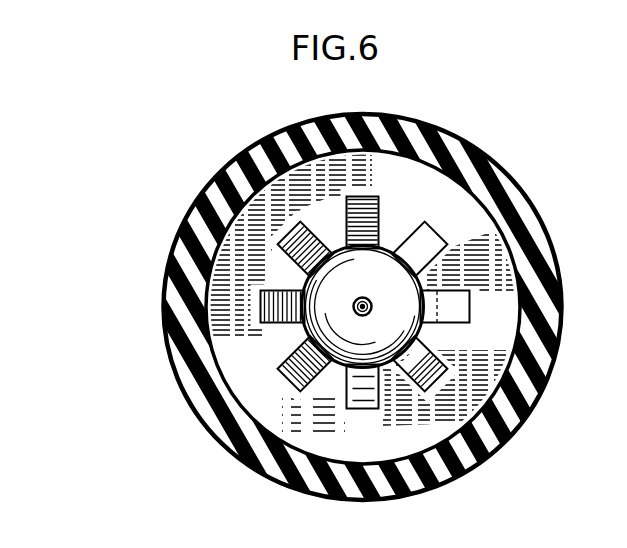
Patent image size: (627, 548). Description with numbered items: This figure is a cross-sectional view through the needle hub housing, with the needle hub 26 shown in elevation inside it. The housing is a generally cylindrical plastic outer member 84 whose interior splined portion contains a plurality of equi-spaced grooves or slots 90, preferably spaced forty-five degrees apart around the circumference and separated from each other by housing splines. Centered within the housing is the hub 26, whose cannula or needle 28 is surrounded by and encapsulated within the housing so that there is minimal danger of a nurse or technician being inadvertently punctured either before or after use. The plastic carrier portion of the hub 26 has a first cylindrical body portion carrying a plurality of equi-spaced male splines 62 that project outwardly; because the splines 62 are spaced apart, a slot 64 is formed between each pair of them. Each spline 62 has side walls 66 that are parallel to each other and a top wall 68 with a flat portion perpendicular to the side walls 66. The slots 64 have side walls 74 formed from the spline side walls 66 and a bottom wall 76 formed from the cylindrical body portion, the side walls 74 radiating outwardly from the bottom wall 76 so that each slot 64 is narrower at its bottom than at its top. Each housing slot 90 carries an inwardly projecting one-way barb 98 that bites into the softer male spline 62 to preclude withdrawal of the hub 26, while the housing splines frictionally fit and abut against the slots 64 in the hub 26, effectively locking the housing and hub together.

The needle hub 26 is at (444, 350).
The cannula or needle 28 is at (430, 323).
The male splines 62 is at (373, 198).
The slot 64 is at (432, 326).
The side walls 66 is at (260, 291).
The top wall 68 is at (260, 302).
The side walls 74 is at (468, 292).
The bottom wall 76 is at (335, 366).
The outer member 84 is at (473, 172).
The grooves or slots 90 is at (291, 236).
The one-way barb 98 is at (427, 247).